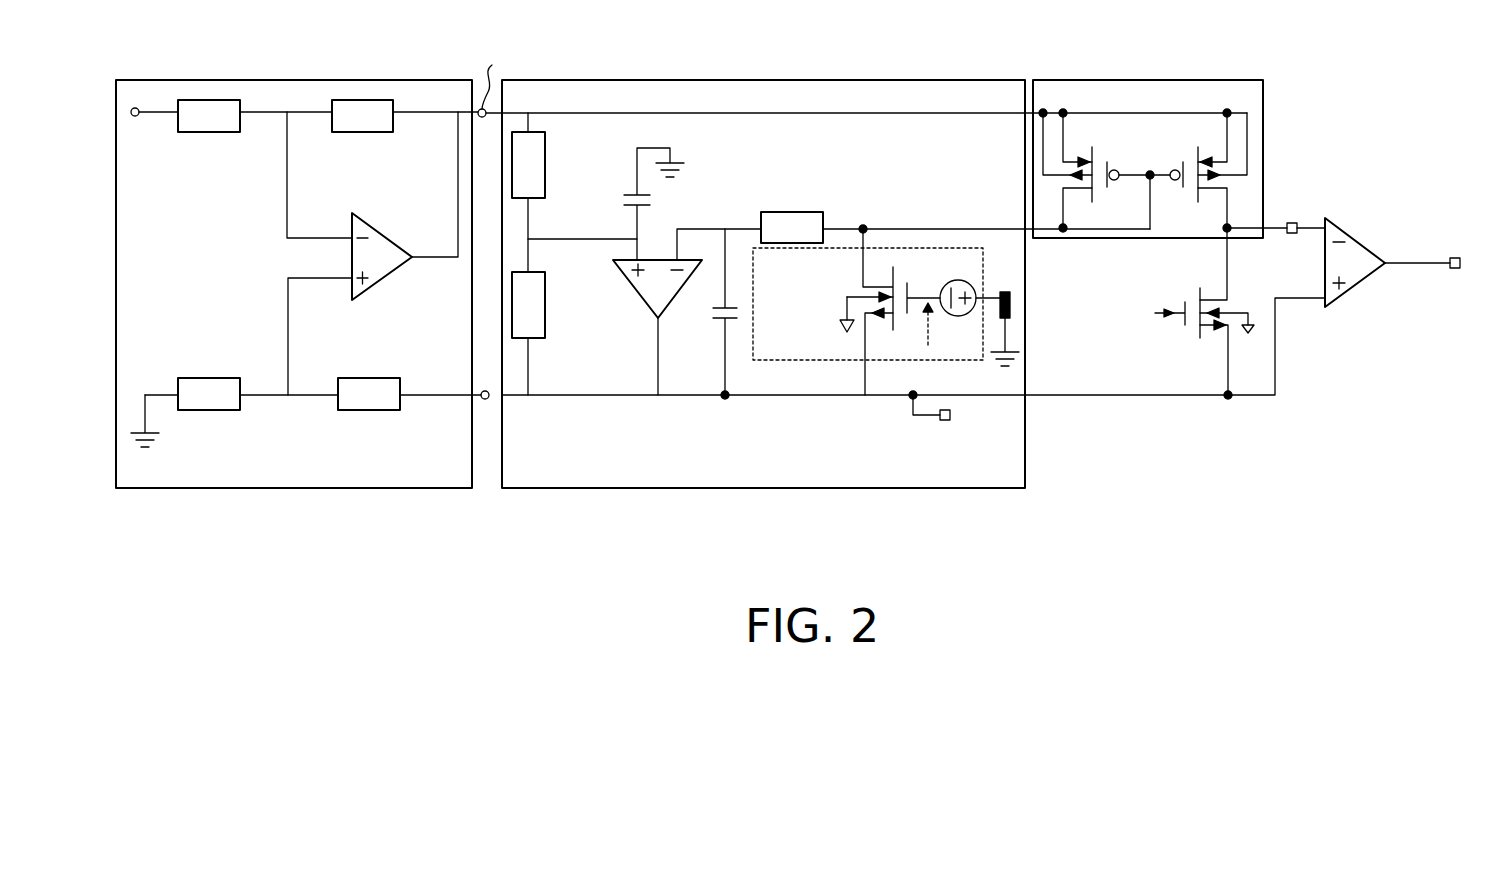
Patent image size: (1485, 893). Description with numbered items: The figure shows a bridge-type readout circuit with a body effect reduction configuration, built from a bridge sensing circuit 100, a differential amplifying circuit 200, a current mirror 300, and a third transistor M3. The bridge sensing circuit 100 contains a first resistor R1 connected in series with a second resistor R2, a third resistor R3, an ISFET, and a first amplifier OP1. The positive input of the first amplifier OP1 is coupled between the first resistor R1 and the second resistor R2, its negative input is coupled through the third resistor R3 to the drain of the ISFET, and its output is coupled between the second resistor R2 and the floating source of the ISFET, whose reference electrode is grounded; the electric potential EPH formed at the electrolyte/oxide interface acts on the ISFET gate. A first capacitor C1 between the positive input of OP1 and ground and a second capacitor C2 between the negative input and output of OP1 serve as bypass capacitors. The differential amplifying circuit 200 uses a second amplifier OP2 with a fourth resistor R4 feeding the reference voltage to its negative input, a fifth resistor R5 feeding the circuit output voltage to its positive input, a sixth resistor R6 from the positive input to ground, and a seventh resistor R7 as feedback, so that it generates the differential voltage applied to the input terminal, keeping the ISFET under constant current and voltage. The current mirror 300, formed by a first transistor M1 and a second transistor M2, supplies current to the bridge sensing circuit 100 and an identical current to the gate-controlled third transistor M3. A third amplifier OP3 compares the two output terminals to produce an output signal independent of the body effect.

The bridge sensing circuit 100 is at (683, 80).
The differential amplifying circuit 200 is at (253, 80).
The current mirror 300 is at (1135, 80).
The first resistor R1 is at (545, 162).
The second resistor R2 is at (545, 297).
The third resistor R3 is at (792, 214).
The fourth resistor R4 is at (207, 132).
The fifth resistor R5 is at (373, 411).
The sixth resistor R6 is at (197, 411).
The seventh resistor R7 is at (362, 132).
The first capacitor C1 is at (654, 204).
The second capacitor C2 is at (707, 312).
The first amplifier OP1 is at (642, 327).
The second amplifier OP2 is at (395, 261).
The third amplifier OP3 is at (1400, 264).
The first transistor M1 is at (1106, 170).
The second transistor M2 is at (1208, 170).
The third transistor M3 is at (1183, 341).
The ion-sensitive field effect transistor ISFET is at (886, 312).
The electric potential at the electrolyte/oxide interface EPH is at (949, 284).